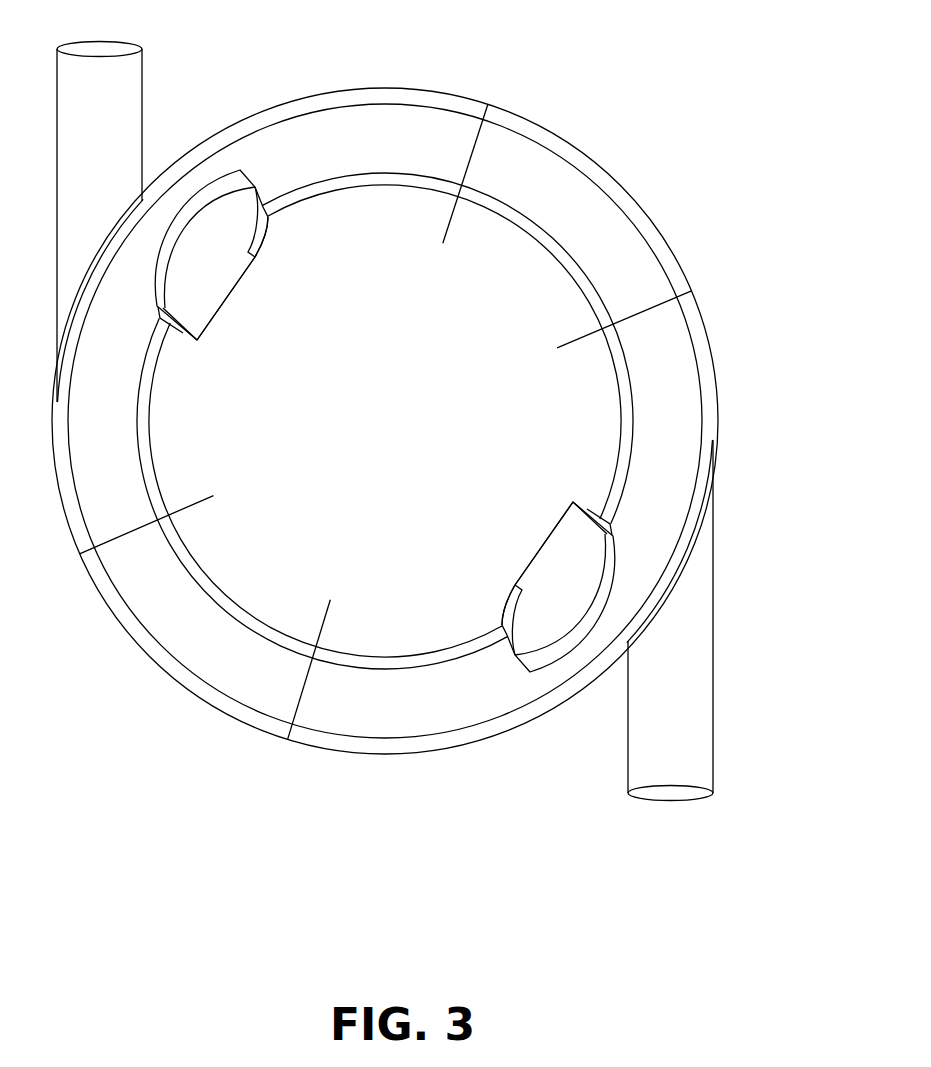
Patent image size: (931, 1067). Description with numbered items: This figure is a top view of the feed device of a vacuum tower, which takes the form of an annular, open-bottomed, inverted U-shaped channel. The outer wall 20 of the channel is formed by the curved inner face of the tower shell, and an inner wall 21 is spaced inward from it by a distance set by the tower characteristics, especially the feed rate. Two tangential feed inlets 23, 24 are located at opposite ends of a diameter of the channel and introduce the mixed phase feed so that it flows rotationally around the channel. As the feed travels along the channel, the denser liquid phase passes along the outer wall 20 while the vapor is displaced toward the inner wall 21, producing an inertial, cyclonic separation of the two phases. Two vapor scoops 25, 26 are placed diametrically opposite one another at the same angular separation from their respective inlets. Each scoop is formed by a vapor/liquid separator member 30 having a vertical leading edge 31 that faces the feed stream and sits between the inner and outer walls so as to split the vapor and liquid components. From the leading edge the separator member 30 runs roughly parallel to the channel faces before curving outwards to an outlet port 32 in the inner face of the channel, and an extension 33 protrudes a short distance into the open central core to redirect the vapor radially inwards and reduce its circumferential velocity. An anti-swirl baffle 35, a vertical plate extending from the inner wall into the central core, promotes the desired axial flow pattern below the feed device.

The outer wall 20 is at (630, 195).
The inner wall 21 is at (565, 270).
The tangential feed inlet 23 is at (142, 97).
The tangential feed inlet 24 is at (713, 710).
The vapor scoop 25 is at (267, 237).
The vapor scoop 26 is at (508, 602).
The vapor/liquid separator member 30 is at (205, 197).
The vertical leading edge 31 is at (257, 192).
The outlet port 32 is at (230, 293).
The extension 33 is at (183, 333).
The anti-swirl baffle 35 is at (193, 503).